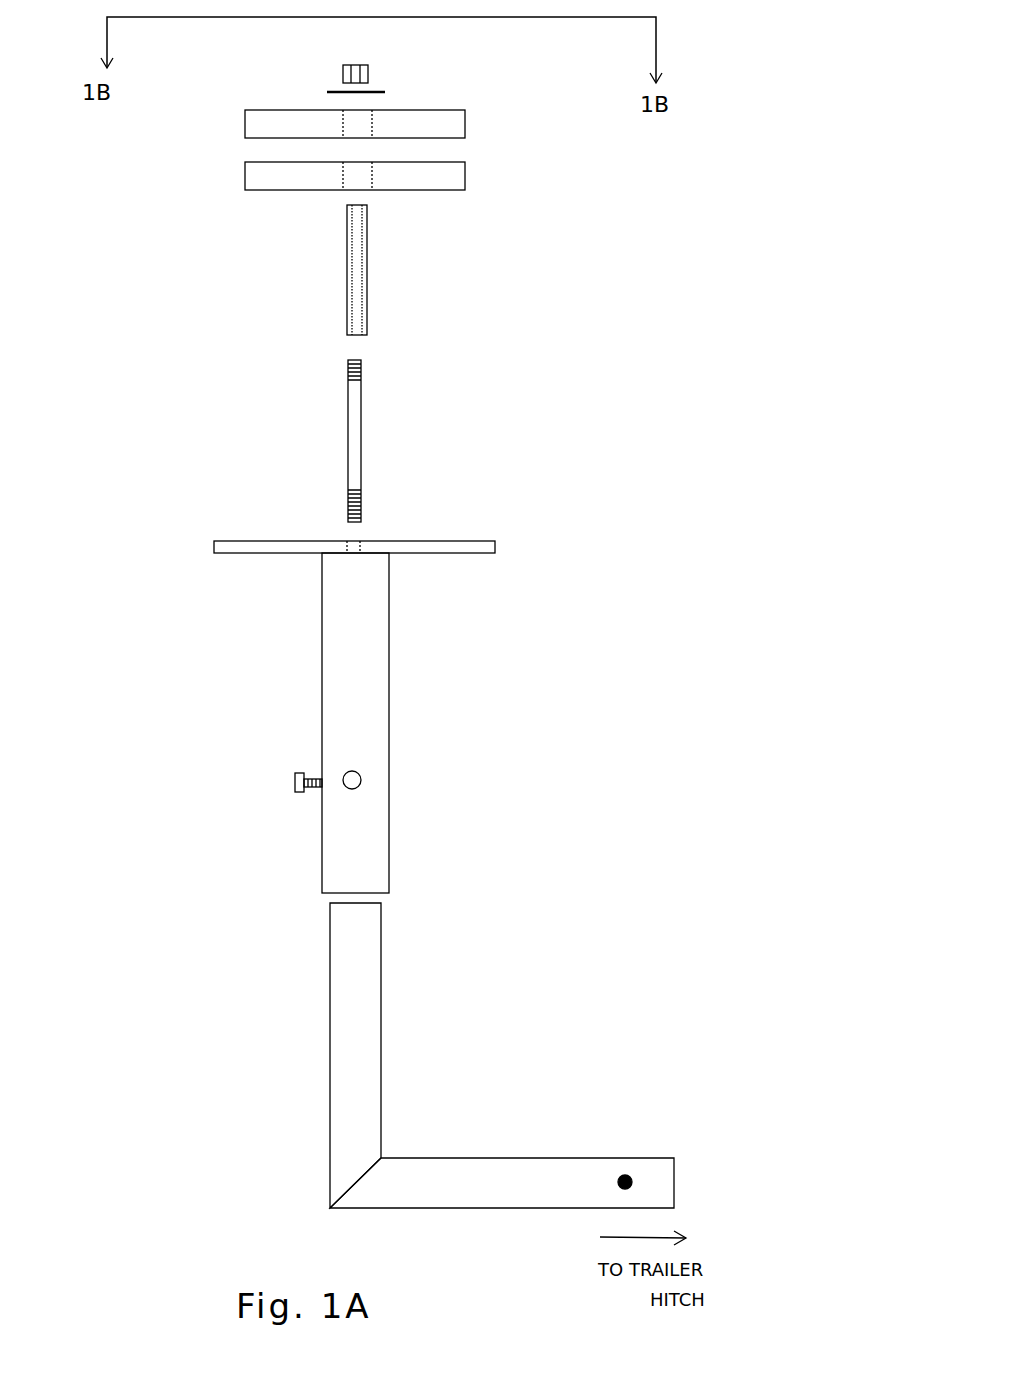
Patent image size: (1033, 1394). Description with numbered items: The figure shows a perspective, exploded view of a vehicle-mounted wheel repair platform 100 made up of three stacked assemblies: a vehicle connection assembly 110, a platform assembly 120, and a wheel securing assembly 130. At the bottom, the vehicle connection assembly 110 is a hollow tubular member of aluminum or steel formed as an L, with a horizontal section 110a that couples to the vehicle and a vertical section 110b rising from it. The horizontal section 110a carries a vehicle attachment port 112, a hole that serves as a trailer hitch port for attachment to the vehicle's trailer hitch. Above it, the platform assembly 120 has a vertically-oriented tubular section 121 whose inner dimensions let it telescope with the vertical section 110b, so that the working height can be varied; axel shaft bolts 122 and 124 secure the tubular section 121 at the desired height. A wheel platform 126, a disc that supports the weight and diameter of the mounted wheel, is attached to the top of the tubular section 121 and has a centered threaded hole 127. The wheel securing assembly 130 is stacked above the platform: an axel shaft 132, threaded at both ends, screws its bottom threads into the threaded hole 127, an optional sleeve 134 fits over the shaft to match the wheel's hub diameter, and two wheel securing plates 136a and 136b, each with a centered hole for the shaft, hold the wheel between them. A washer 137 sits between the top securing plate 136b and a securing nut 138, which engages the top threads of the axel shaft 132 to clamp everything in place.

The vehicle-mounted wheel repair platform 100 is at (748, 85).
The vehicle connection assembly 110 is at (535, 1052).
The horizontal section 110a is at (431, 1158).
The vertical section 110b is at (381, 965).
The vehicle attachment port 112 is at (627, 1175).
The platform assembly 120 is at (477, 747).
The vertically-oriented tubular section 121 is at (389, 638).
The axel shaft bolt 122 is at (361, 779).
The axel shaft bolt 124 is at (295, 782).
The wheel platform 126 is at (495, 548).
The threaded hole 127 is at (357, 538).
The wheel securing assembly 130 is at (622, 298).
The axel shaft 132 is at (361, 428).
The sleeve 134 is at (367, 272).
The wheel securing plate 136a is at (466, 174).
The wheel securing plate 136b is at (466, 126).
The washer 137 is at (327, 92).
The securing nut 138 is at (366, 64).